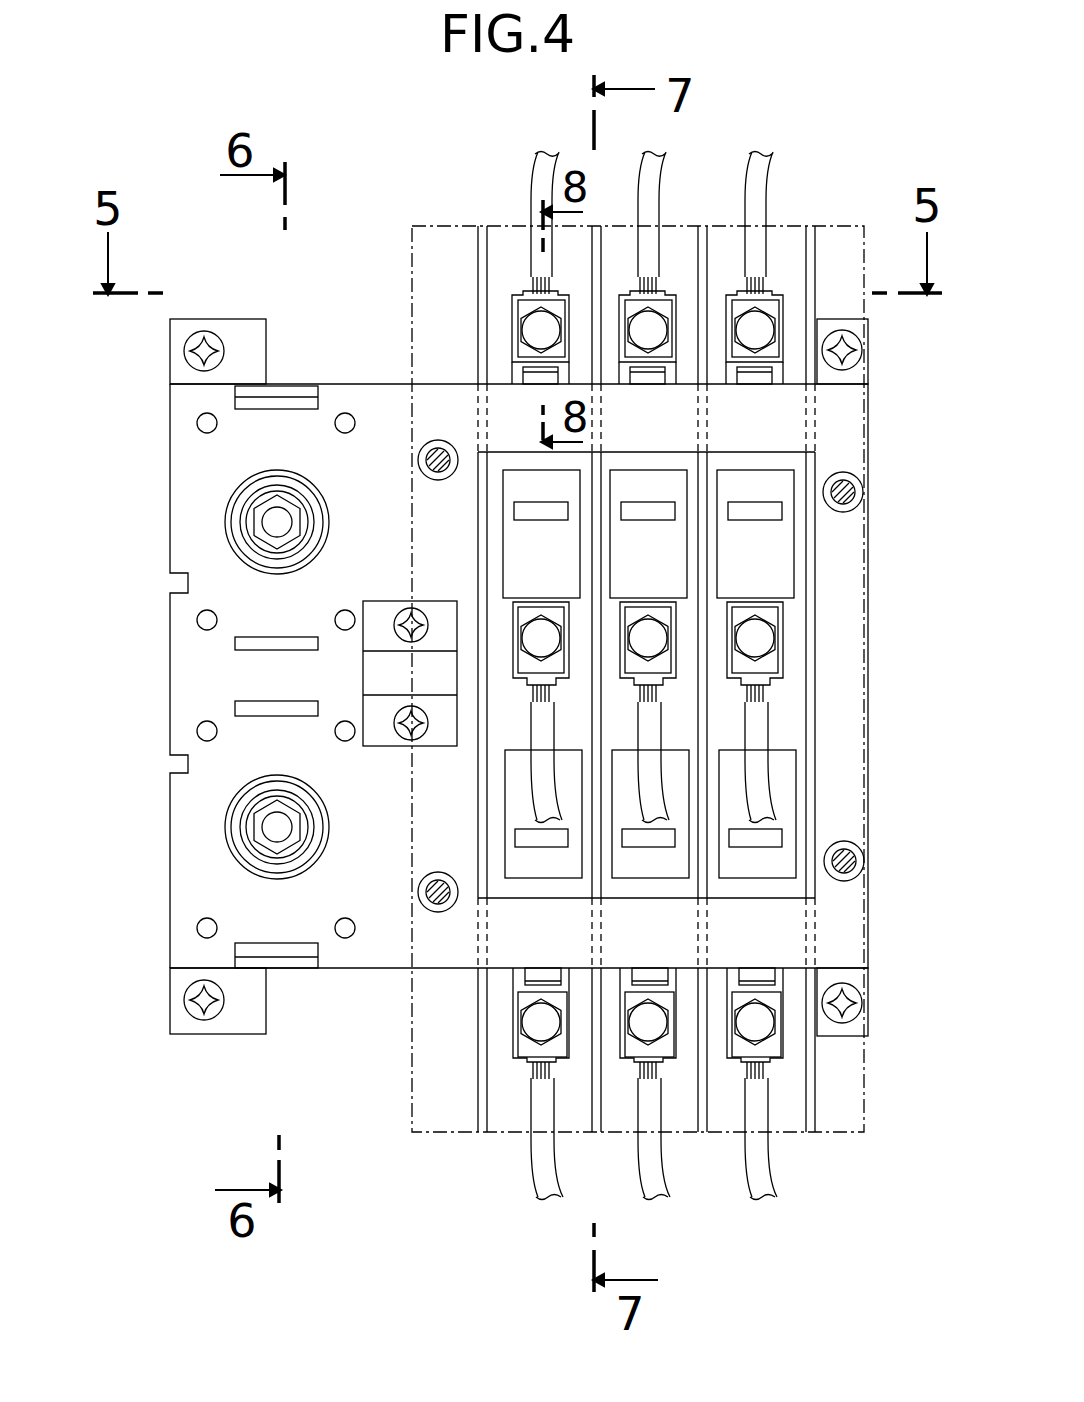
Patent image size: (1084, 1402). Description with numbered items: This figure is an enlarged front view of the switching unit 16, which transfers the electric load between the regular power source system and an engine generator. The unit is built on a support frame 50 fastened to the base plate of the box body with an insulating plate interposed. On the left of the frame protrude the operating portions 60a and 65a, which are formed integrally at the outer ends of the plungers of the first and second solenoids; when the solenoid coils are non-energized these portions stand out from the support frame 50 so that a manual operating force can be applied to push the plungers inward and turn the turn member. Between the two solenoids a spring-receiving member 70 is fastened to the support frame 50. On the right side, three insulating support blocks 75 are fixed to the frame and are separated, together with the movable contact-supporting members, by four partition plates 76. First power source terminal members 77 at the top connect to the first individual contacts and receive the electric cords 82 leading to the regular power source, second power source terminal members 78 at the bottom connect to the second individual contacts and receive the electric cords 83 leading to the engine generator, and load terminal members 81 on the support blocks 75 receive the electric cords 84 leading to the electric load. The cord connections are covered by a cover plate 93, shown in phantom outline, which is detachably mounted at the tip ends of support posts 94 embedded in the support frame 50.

The switching unit 16 is at (875, 612).
The support frame 50 is at (375, 393).
The cover plate 93 is at (410, 302).
The operating portion 65a is at (250, 495).
The operating portion 60a is at (240, 826).
The spring-receiving member 70 is at (387, 610).
The support posts 94 is at (430, 468).
The support blocks 75 is at (493, 772).
The partition plates 76 is at (485, 1083).
The first power source terminal members 77 is at (783, 305).
The second power source terminal members 78 is at (780, 1003).
The load terminal members 81 is at (783, 657).
The electric cords 82 is at (755, 205).
The electric cords 83 is at (762, 1140).
The electric cords 84 is at (766, 798).